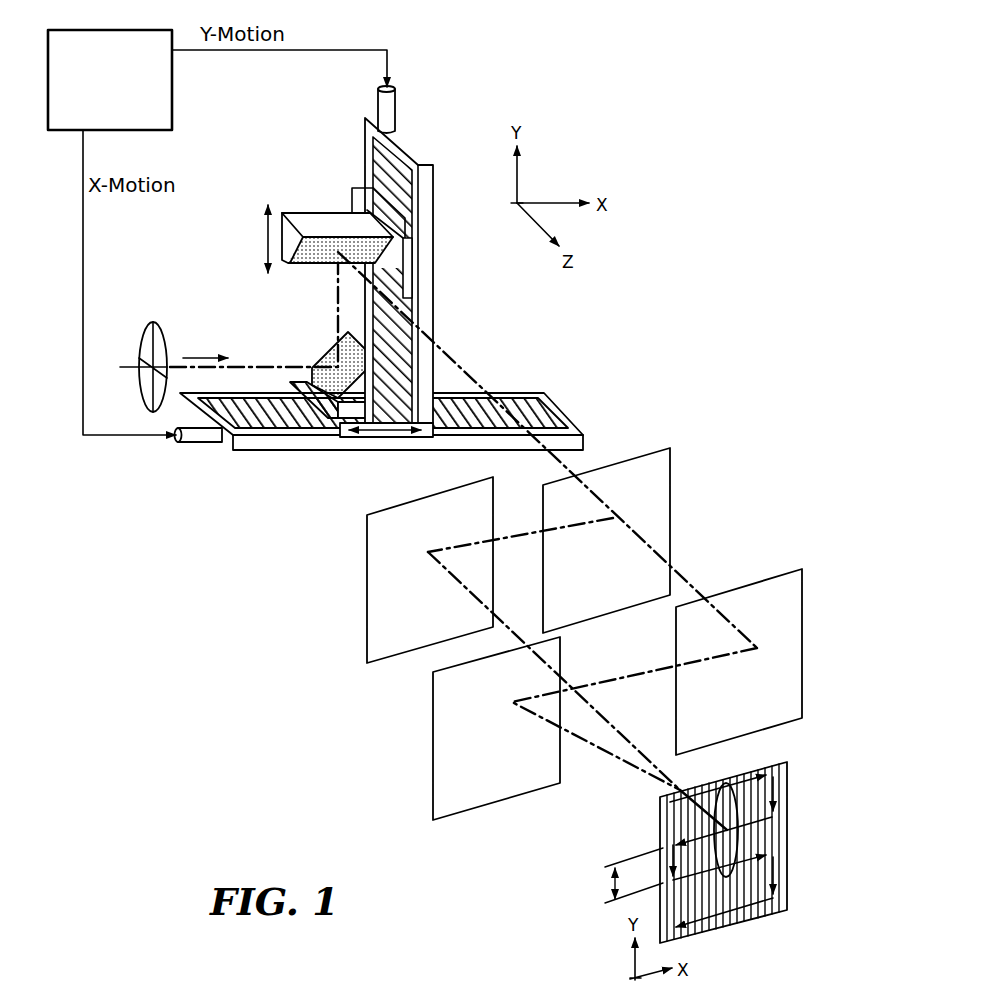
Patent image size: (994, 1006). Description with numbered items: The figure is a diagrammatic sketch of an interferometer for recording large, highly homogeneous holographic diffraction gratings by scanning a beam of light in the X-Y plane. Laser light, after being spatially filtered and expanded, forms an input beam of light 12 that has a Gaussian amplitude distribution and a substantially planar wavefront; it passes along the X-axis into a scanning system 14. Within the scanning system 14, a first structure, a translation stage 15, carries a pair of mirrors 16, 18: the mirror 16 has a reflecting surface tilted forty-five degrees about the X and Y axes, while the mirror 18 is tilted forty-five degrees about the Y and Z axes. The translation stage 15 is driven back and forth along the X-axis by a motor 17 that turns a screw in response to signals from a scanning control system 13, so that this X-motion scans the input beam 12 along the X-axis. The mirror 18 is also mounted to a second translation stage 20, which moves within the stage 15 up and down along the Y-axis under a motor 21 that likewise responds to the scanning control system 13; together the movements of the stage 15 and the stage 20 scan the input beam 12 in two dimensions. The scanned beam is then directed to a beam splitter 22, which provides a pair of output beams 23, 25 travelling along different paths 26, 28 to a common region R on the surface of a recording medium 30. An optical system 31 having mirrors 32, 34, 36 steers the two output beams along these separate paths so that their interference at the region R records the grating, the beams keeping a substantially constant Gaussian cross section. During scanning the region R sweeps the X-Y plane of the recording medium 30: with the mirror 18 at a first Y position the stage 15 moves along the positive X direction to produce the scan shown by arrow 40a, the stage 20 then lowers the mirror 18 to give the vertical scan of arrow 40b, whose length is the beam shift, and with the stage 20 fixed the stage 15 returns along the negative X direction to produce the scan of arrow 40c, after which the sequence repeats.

The input beam of light 12 is at (252, 366).
The scanning control system 13 is at (115, 30).
The scanning system 14 is at (205, 266).
The translation stage 15 is at (388, 442).
The mirror 16 is at (309, 405).
The motor 17 is at (203, 441).
The mirror 18 is at (323, 262).
The translation stage 20 is at (410, 272).
The motor 21 is at (386, 111).
The beam splitter 22 is at (670, 463).
The output beam 23 is at (687, 587).
The output beam 25 is at (517, 535).
The path 26 is at (598, 709).
The path 28 is at (602, 681).
The recording medium 30 is at (722, 856).
The optical system 31 is at (327, 681).
The mirror 32 is at (367, 566).
The mirror 34 is at (433, 723).
The mirror 36 is at (801, 620).
The arrow 40a is at (739, 778).
The vertical arrow 40b is at (777, 783).
The arrow 40c is at (695, 838).
The common region R is at (736, 840).